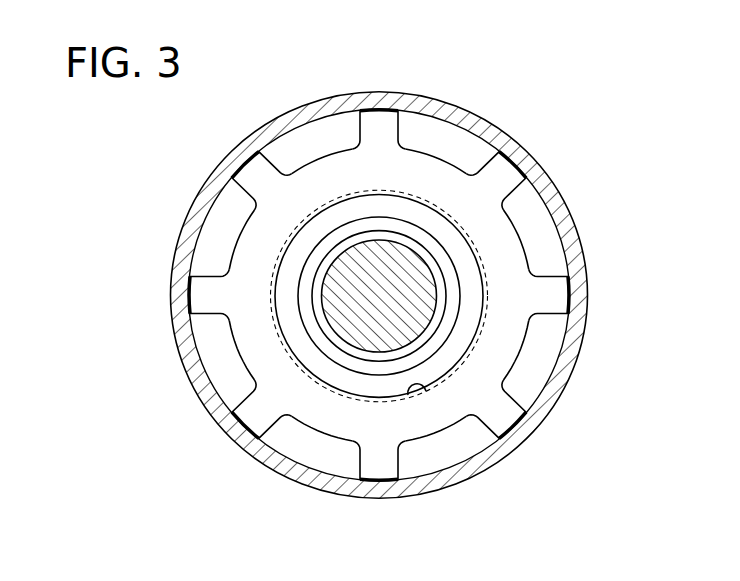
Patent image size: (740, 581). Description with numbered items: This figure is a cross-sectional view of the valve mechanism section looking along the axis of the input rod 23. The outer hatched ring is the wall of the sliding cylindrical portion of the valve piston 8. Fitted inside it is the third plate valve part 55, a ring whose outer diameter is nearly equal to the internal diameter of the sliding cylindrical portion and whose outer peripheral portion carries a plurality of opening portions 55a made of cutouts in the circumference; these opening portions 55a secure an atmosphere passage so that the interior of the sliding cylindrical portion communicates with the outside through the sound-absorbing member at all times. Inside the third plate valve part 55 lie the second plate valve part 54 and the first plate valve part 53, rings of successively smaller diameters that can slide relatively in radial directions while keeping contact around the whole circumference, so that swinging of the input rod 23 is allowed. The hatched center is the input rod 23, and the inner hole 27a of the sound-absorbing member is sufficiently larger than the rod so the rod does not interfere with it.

The valve piston 8 is at (532, 167).
The third plate valve part 55 is at (440, 175).
The opening portions 55a is at (430, 125).
The second plate valve part 54 is at (337, 387).
The first plate valve part 53 is at (450, 270).
The input rod 23 is at (337, 267).
The inner hole 27a is at (428, 393).